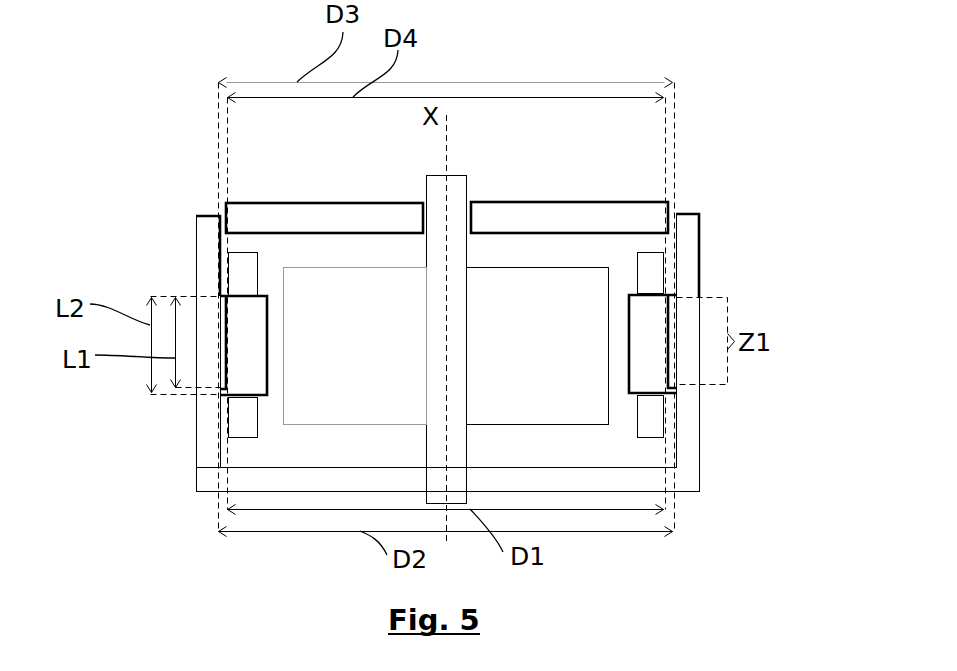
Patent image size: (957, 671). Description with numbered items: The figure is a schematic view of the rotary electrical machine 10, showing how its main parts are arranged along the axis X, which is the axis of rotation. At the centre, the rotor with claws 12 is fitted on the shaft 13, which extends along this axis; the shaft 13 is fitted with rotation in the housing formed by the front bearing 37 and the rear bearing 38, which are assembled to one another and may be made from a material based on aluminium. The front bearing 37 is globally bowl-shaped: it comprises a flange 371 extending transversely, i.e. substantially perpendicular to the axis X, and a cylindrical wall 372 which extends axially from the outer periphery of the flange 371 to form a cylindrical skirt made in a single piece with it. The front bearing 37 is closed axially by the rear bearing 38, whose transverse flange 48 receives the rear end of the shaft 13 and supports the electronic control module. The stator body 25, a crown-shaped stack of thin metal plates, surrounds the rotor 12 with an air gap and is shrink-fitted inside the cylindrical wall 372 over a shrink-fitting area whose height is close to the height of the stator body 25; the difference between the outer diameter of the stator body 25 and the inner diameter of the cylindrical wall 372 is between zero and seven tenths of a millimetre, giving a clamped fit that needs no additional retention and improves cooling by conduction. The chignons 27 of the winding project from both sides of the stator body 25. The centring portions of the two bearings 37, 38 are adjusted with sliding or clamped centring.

The rotary electrical machine 10 is at (738, 127).
The rotor with claws 12 is at (553, 395).
The shaft 13 is at (455, 222).
The stator body 25 is at (651, 312).
The chignons 27 is at (653, 267).
The front bearing 37 is at (683, 473).
The rear bearing 38 is at (621, 222).
The transverse flange 48 is at (347, 215).
The flange 371 is at (290, 480).
The cylindrical wall 372 is at (690, 440).